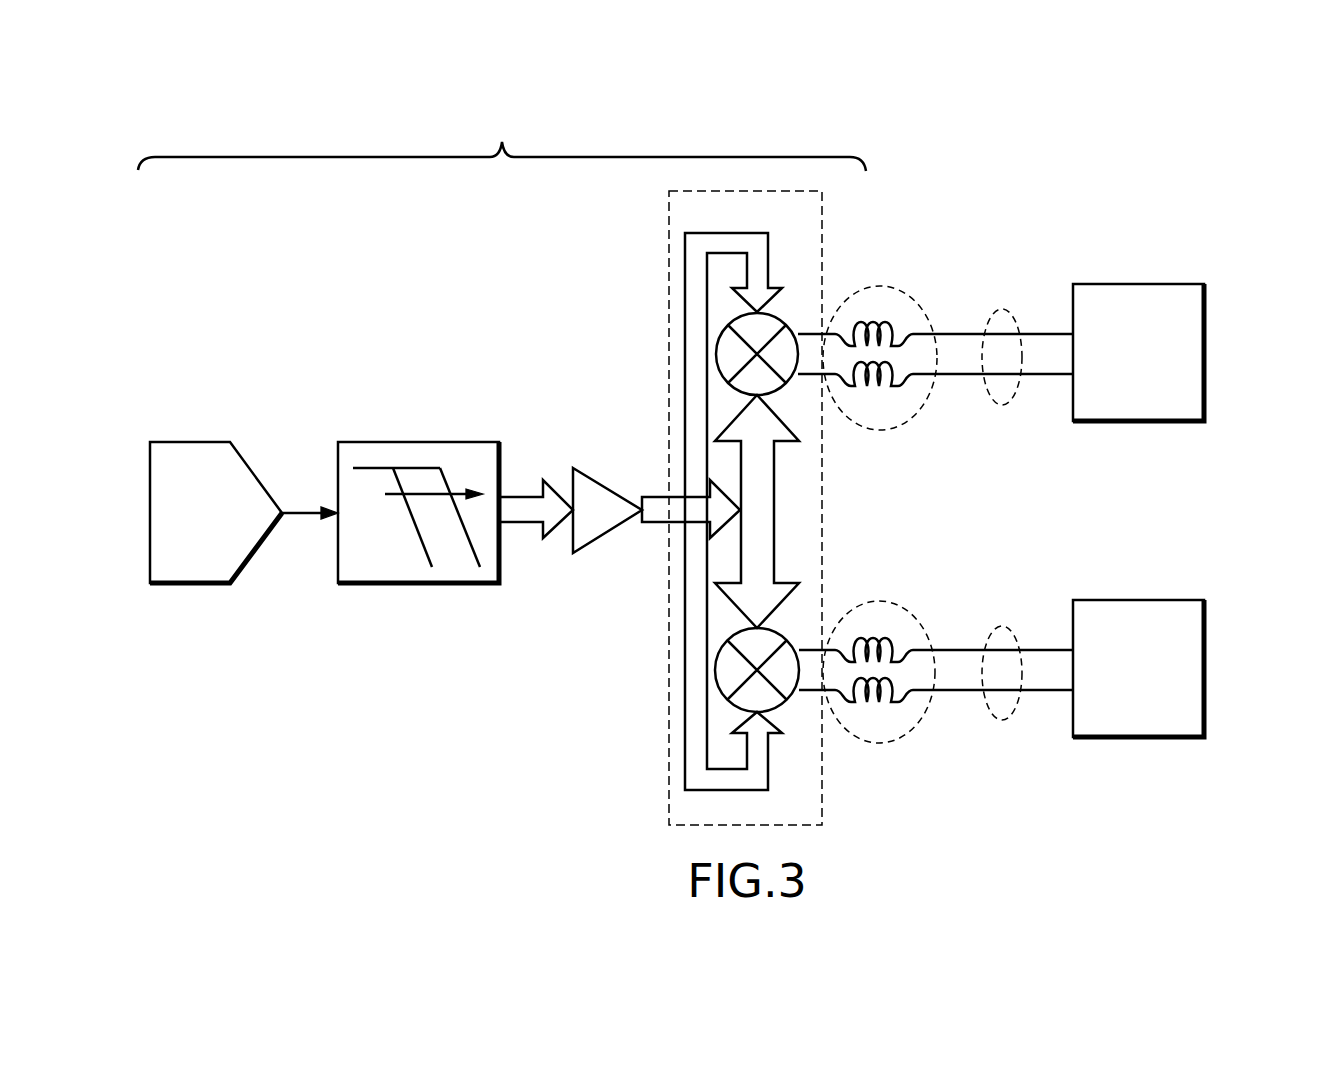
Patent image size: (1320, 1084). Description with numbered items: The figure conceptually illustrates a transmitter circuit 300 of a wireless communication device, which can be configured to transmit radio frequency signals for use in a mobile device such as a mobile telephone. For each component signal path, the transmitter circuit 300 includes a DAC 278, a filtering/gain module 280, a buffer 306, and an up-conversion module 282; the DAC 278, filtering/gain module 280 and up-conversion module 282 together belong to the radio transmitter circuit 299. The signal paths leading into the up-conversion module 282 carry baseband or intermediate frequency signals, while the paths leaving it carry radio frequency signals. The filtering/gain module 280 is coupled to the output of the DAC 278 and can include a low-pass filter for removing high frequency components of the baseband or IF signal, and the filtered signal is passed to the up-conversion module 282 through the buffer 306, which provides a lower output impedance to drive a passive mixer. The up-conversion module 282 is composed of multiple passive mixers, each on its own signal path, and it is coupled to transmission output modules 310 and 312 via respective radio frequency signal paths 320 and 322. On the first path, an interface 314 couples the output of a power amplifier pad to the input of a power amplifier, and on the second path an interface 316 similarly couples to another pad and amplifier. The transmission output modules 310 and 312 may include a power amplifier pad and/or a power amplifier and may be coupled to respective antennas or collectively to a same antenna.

The DAC 278 is at (242, 458).
The filtering/gain module 280 is at (500, 457).
The buffer 306 is at (576, 470).
The up-conversion module 282 is at (822, 780).
The interface 314 is at (925, 318).
The interface 316 is at (925, 628).
The radio frequency signal path 320 is at (1007, 314).
The radio frequency signal path 322 is at (1007, 628).
The transmission output module 310 is at (1205, 318).
The transmission output module 312 is at (1205, 645).
The radio transmitter circuit 299 is at (502, 141).
The transmitter circuit 300 is at (956, 167).